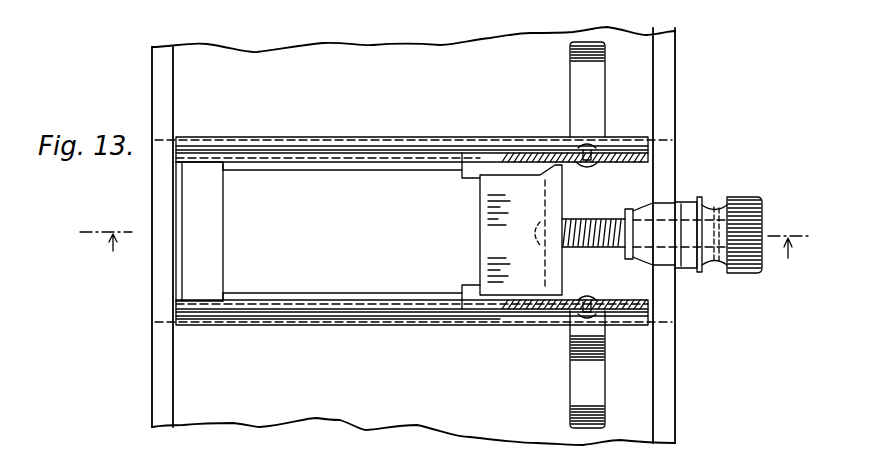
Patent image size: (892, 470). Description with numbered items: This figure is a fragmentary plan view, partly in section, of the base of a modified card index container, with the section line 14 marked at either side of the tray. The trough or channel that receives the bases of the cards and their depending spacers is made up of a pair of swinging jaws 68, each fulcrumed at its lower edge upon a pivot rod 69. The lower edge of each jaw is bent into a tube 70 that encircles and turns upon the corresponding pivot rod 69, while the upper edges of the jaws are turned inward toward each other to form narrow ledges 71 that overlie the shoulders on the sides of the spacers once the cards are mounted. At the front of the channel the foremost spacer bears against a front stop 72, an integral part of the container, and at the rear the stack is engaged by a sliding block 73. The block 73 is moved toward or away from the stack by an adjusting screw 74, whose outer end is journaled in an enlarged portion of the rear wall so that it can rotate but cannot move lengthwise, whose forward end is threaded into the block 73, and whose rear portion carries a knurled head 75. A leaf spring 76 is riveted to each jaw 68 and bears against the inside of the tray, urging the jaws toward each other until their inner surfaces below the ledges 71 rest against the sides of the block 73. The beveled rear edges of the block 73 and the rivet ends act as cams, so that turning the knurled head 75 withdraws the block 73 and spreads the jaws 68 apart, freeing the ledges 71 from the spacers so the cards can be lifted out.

The section line 14 is at (446, 260).
The swinging jaw 68 is at (318, 160).
The pivot rod 69 is at (252, 140).
The tube 70 is at (252, 322).
The ledge 71 is at (285, 300).
The front stop 72 is at (200, 195).
The sliding block 73 is at (523, 190).
The adjusting screw 74 is at (604, 222).
The knurled head 75 is at (745, 205).
The leaf spring 76 is at (585, 77).